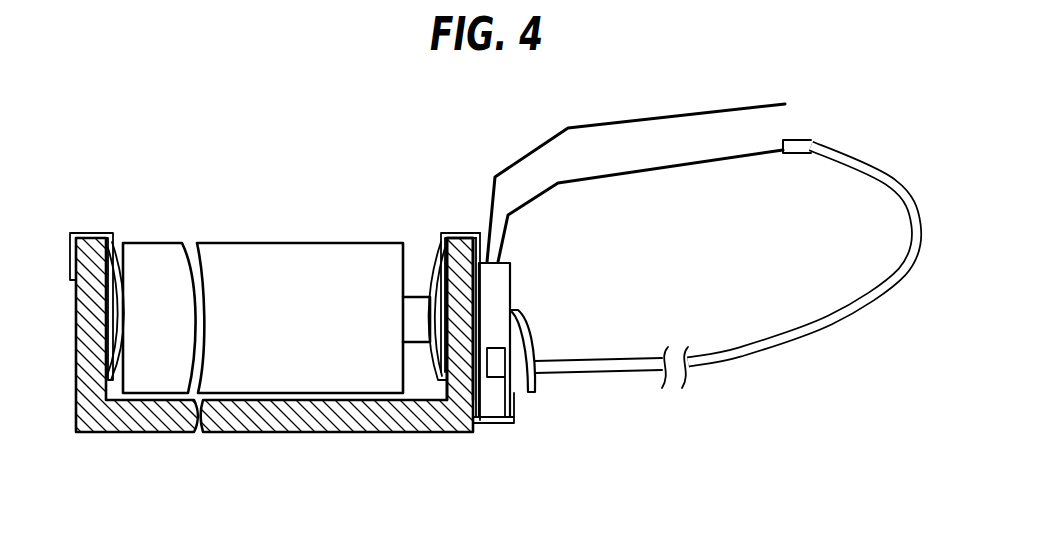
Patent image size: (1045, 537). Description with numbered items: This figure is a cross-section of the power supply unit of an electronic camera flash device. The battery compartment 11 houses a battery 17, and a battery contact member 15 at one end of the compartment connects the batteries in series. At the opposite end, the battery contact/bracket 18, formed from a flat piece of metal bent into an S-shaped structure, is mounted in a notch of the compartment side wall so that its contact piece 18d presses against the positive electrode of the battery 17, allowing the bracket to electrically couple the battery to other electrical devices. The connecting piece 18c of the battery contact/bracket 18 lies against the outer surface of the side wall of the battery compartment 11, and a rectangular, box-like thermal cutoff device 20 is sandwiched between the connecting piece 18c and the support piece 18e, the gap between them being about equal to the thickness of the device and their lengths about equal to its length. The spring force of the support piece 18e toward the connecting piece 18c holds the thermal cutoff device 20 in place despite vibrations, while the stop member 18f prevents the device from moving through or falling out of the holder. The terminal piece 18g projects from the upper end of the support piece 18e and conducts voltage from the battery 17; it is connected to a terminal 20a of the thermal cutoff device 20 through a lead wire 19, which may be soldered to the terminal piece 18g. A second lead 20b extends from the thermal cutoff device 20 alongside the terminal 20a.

The battery compartment 11 is at (170, 432).
The battery contact member 15 is at (92, 233).
The battery 17 is at (222, 242).
The battery contact/bracket 18 is at (460, 233).
The connecting piece 18c is at (474, 363).
The contact piece 18d is at (437, 247).
The support piece 18e is at (513, 395).
The stop member 18f is at (498, 367).
The terminal piece 18g is at (537, 373).
The lead wire 19 is at (858, 314).
The thermal cutoff device 20 is at (512, 292).
The terminal 20a is at (670, 167).
The upper lead wire 20b is at (662, 117).